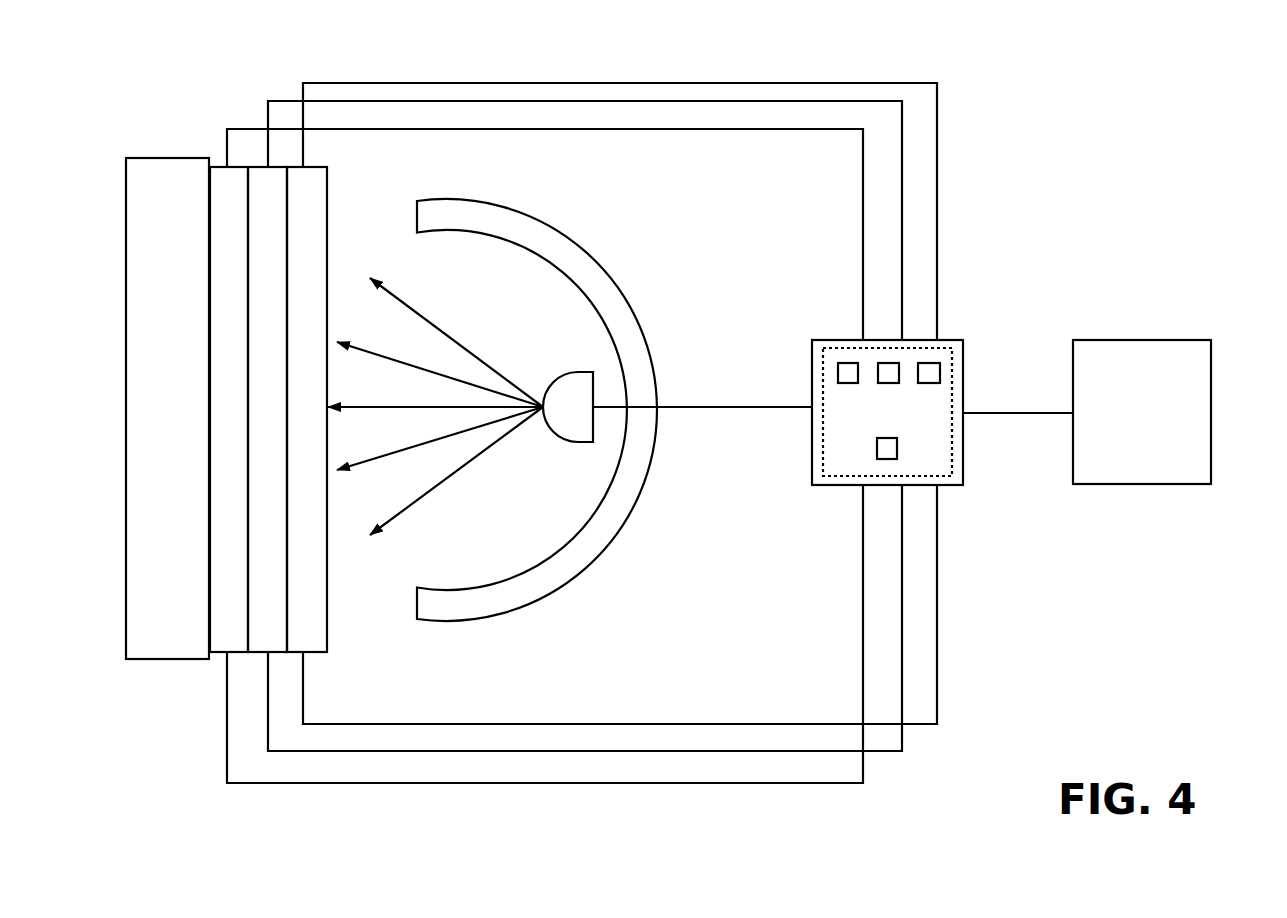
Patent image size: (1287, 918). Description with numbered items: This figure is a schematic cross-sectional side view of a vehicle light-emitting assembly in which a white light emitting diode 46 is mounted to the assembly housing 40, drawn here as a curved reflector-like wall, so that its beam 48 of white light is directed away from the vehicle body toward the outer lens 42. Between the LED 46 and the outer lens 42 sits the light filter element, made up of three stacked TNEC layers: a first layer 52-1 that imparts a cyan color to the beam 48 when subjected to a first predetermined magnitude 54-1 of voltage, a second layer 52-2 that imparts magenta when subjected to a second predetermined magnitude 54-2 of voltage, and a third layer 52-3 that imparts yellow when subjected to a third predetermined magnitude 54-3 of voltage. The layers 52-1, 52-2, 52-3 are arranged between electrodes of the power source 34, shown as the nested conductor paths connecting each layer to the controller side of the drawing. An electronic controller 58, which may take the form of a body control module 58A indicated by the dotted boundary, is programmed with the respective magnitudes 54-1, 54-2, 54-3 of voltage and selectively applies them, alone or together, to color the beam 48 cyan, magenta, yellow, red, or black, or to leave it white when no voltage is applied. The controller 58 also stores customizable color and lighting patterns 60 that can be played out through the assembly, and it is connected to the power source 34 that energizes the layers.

The power source 34 is at (1159, 484).
The assembly housing 40 is at (613, 532).
The outer lens 42 is at (170, 150).
The white light emitting diode 46 is at (580, 366).
The beam of light 48 is at (477, 406).
The first TNEC layer 52-1 is at (328, 187).
The second TNEC layer 52-2 is at (260, 653).
The third TNEC layer 52-3 is at (219, 653).
The first predetermined magnitude of voltage 54-1 is at (848, 362).
The second predetermined magnitude of voltage 54-2 is at (885, 362).
The third predetermined magnitude of voltage 54-3 is at (930, 362).
The electronic controller 58 is at (963, 387).
The body control module 58A is at (963, 452).
The color and lighting patterns 60 is at (885, 459).